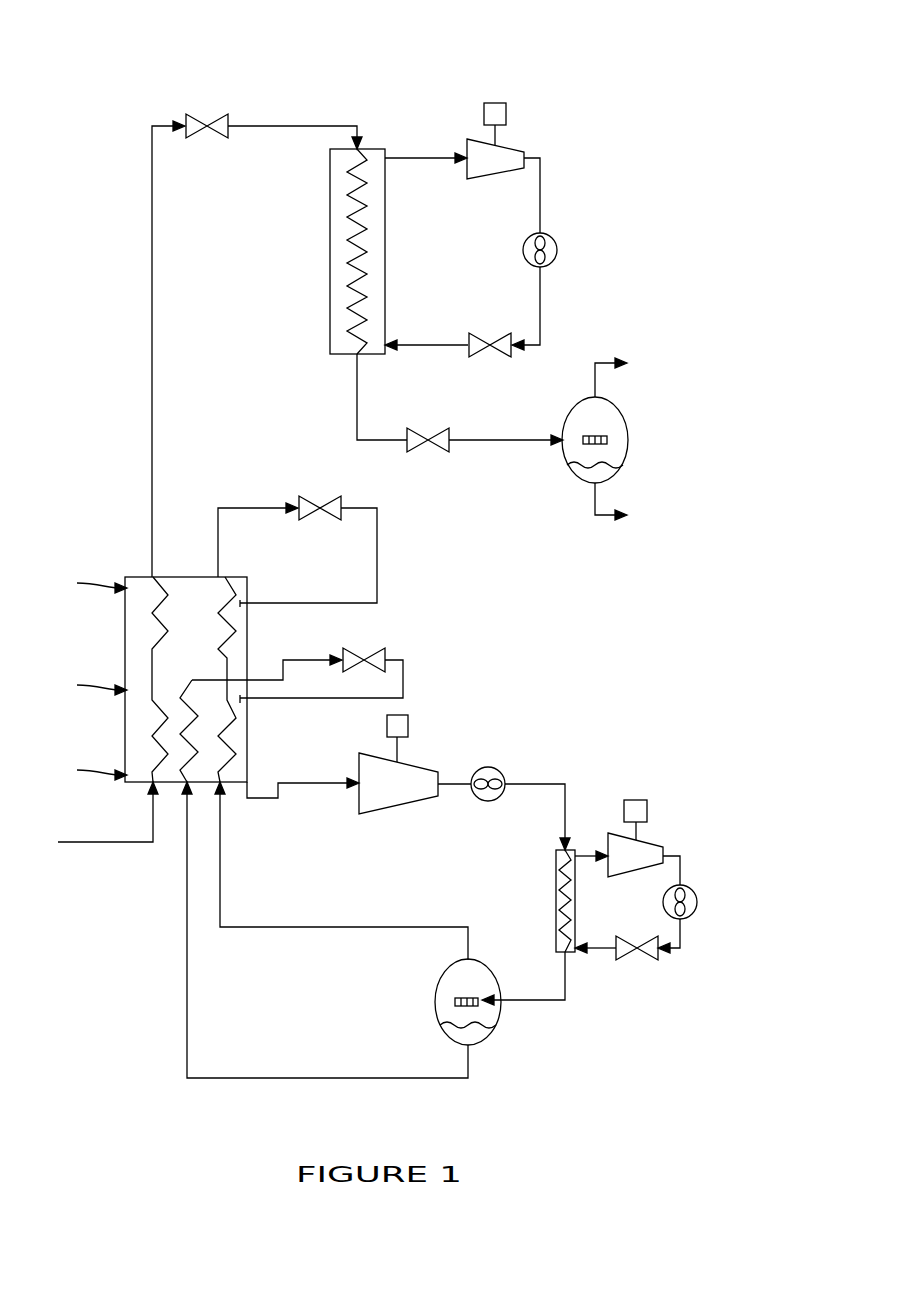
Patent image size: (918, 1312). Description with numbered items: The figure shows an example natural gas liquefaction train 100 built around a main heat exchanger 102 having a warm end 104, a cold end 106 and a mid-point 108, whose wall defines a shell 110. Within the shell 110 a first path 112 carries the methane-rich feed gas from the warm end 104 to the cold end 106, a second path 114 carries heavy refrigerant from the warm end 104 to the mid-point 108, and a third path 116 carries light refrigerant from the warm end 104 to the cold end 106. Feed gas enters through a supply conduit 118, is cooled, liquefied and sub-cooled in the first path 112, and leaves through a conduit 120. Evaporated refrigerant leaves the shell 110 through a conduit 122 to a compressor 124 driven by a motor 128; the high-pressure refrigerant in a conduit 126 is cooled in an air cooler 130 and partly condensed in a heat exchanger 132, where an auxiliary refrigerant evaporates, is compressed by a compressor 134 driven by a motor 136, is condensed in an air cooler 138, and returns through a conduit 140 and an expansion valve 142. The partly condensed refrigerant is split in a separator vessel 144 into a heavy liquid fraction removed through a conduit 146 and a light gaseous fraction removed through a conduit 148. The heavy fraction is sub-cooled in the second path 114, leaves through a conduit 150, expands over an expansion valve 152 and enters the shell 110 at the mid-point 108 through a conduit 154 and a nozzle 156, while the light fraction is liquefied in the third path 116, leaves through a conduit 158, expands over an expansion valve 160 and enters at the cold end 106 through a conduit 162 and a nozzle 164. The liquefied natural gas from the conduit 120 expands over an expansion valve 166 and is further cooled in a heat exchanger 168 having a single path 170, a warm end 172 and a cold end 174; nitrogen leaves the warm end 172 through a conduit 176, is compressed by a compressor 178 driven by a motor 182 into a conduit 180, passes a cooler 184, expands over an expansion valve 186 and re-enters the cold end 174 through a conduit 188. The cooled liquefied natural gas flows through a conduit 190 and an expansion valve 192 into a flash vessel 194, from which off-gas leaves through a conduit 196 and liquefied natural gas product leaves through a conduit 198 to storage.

The natural gas liquefaction train 100 is at (181, 49).
The main heat exchanger 102 is at (136, 563).
The warm end 104 is at (82, 768).
The cold end 106 is at (82, 581).
The mid-point 108 is at (82, 682).
The shell 110 is at (186, 651).
The first path 112 is at (174, 641).
The second path 114 is at (178, 694).
The third path 116 is at (232, 773).
The supply conduit 118 is at (85, 843).
The conduit 120 is at (144, 349).
The conduit 122 is at (255, 800).
The compressor 124 is at (378, 815).
The conduit 126 is at (448, 780).
The motor 128 is at (408, 722).
The air cooler 130 is at (488, 803).
The heat exchanger 132 is at (553, 900).
The compressor 134 is at (653, 842).
The motor 136 is at (637, 799).
The air cooler 138 is at (697, 903).
The conduit 140 is at (683, 944).
The expansion valve 142 is at (622, 958).
The separator vessel 144 is at (433, 1002).
The conduit 146 is at (303, 1080).
The conduit 148 is at (332, 928).
The conduit 150 is at (263, 678).
The expansion valve 152 is at (377, 645).
The conduit 154 is at (405, 672).
The nozzle 156 is at (247, 709).
The conduit 158 is at (240, 507).
The expansion valve 160 is at (330, 500).
The conduit 162 is at (377, 562).
The nozzle 164 is at (247, 613).
The expansion valve 166 is at (215, 116).
The heat exchanger 168 is at (319, 251).
The single path 170 is at (345, 309).
The warm end 172 is at (331, 155).
The cold end 174 is at (343, 355).
The conduit 176 is at (418, 157).
The compressor 178 is at (487, 180).
The conduit 180 is at (541, 216).
The motor 182 is at (494, 102).
The cooler 184 is at (523, 252).
The expansion valve 186 is at (498, 350).
The conduit 188 is at (435, 345).
The conduit 190 is at (360, 407).
The expansion valve 192 is at (412, 452).
The flash vessel 194 is at (630, 440).
The conduit 196 is at (595, 380).
The conduit 198 is at (595, 500).